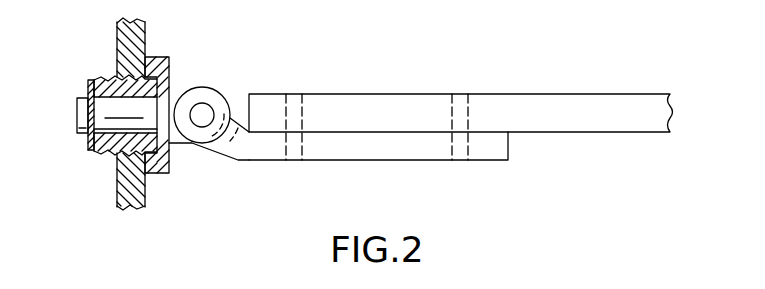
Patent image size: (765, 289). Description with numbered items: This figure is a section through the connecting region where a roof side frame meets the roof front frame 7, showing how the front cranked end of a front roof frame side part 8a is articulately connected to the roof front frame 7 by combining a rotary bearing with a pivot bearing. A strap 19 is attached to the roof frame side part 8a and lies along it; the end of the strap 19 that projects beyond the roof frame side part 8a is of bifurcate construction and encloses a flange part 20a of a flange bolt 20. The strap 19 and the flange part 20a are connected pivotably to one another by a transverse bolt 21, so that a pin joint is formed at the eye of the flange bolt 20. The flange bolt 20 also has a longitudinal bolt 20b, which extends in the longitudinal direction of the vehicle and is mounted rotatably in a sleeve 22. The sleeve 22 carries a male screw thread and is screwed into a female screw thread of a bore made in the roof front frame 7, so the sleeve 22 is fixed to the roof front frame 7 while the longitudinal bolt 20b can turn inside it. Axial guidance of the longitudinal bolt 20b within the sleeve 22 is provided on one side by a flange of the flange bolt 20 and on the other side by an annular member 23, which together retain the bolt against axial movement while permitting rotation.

The roof front frame 7 is at (132, 193).
The front roof frame side part 8a is at (418, 105).
The strap 19 is at (402, 155).
The flange bolt 20 is at (172, 149).
The flange part 20a is at (170, 87).
The longitudinal bolt 20b is at (122, 108).
The transverse bolt 21 is at (203, 112).
The sleeve 22 is at (103, 147).
The annular member 23 is at (83, 140).